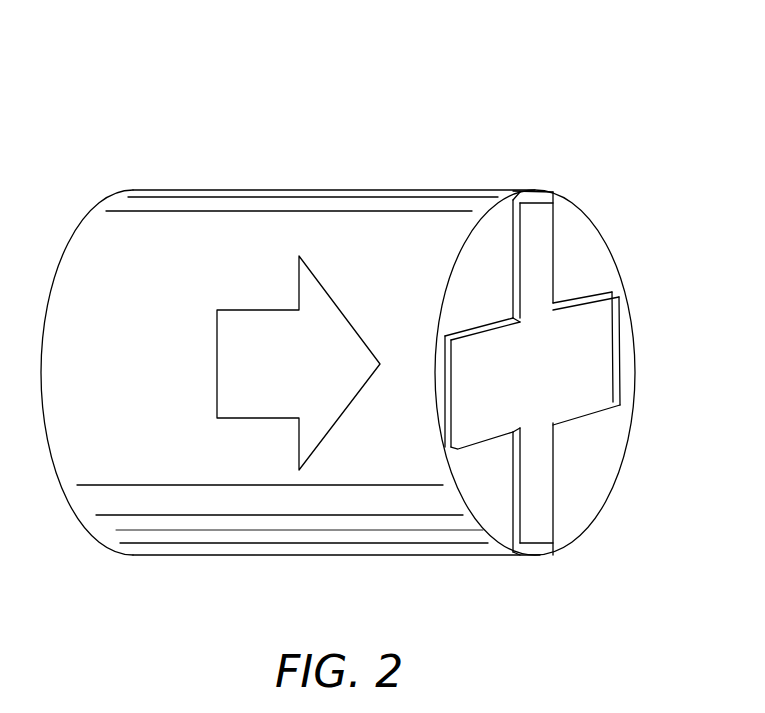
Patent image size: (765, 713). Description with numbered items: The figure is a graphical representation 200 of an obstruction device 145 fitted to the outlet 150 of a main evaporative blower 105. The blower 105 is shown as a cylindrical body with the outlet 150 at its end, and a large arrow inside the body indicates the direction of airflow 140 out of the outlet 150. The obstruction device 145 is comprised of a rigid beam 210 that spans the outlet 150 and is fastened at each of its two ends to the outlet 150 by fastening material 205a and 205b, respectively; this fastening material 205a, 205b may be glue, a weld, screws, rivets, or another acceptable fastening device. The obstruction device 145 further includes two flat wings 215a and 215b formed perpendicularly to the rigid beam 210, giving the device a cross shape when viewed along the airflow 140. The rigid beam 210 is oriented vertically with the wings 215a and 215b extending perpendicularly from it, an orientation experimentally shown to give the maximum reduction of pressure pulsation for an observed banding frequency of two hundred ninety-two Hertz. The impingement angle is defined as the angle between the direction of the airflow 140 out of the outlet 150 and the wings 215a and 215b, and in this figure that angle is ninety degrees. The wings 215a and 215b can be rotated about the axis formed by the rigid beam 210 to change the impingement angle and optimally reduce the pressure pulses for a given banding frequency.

The graphical representation 200 is at (465, 83).
The main evaporative blower 105 is at (200, 190).
The airflow 140 is at (258, 318).
The obstruction device 145 is at (512, 309).
The outlet 150 is at (490, 513).
The fastening material 205a is at (540, 190).
The fastening material 205b is at (545, 556).
The rigid beam 210 is at (540, 277).
The flat wing 215a is at (597, 345).
The flat wing 215b is at (463, 420).